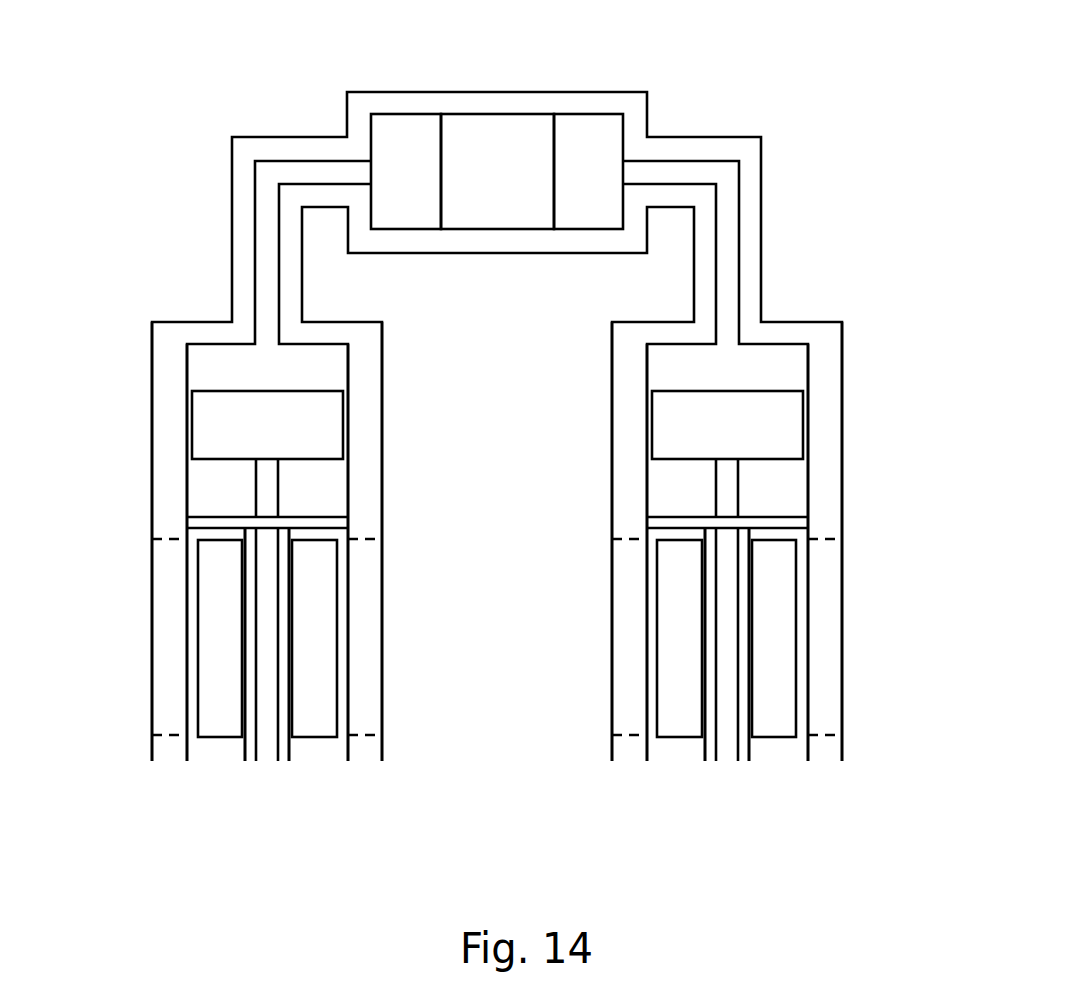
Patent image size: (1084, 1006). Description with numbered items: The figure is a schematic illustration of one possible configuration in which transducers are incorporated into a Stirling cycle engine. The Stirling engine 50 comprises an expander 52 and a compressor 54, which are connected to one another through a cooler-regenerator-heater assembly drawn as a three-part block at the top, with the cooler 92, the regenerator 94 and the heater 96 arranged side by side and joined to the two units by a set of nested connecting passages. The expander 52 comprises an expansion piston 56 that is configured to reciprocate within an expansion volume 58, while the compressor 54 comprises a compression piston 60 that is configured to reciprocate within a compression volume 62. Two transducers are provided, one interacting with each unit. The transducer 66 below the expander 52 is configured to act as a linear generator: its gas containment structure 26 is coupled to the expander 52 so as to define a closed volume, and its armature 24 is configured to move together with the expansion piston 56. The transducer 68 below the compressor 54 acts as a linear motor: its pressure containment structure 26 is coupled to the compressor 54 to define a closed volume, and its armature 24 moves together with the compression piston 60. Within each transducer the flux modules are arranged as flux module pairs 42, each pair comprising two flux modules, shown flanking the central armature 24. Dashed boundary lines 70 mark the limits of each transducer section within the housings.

The Stirling engine 50 is at (788, 101).
The expander 52 is at (599, 353).
The compressor 54 is at (398, 358).
The expansion piston 56 is at (792, 427).
The expansion volume 58 is at (792, 370).
The compression piston 60 is at (202, 427).
The compression volume 62 is at (202, 370).
The transducer 66 is at (858, 527).
The transducer 68 is at (140, 529).
The boundary line 70 is at (372, 538).
The armature 24 is at (267, 581).
The gas containment structure 26 is at (247, 645).
The flux module pair 42 is at (213, 698).
The cooler 92 is at (404, 142).
The regenerator 94 is at (502, 142).
The heater 96 is at (590, 148).